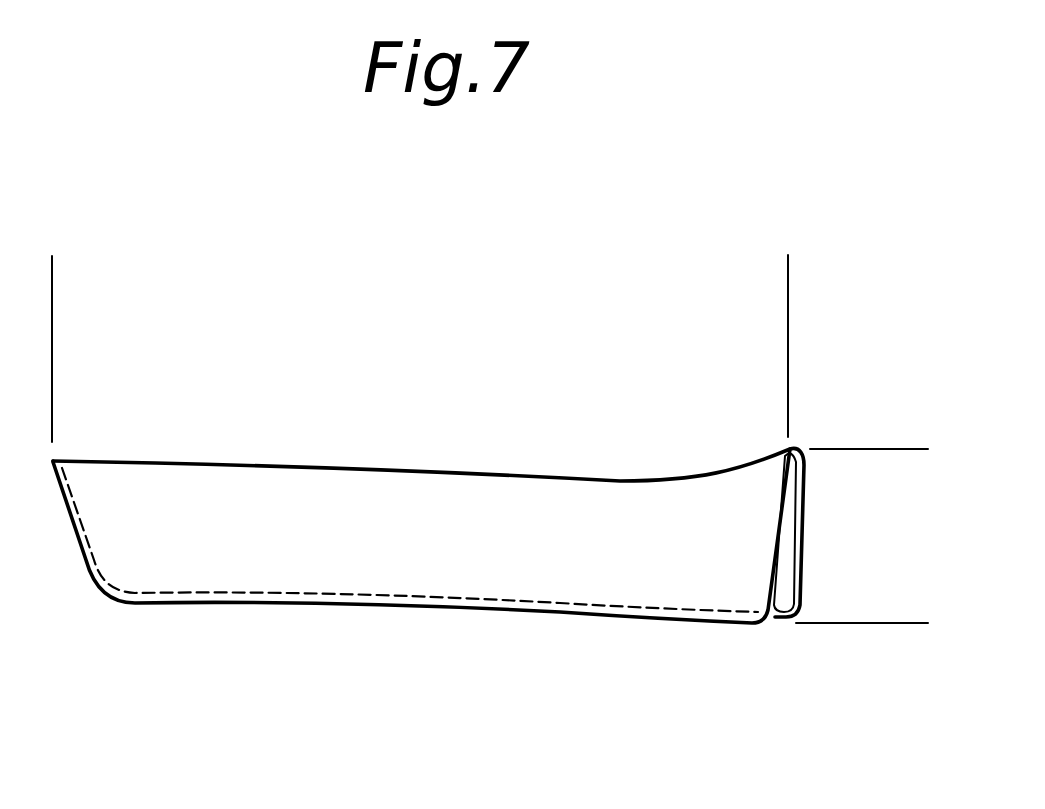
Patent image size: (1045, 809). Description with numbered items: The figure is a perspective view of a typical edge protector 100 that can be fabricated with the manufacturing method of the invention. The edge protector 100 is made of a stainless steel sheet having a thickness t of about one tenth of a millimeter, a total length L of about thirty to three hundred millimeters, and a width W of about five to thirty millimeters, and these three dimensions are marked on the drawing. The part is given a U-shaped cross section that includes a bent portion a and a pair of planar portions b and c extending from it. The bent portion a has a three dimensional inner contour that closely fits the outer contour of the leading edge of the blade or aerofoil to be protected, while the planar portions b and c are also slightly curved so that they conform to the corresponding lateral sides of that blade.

The edge protector 100 is at (428, 558).
The bent portion a is at (340, 470).
The planar portion b is at (290, 560).
The planar portion c is at (574, 553).
The total length L is at (788, 282).
The width W is at (892, 449).
The thickness t is at (843, 555).